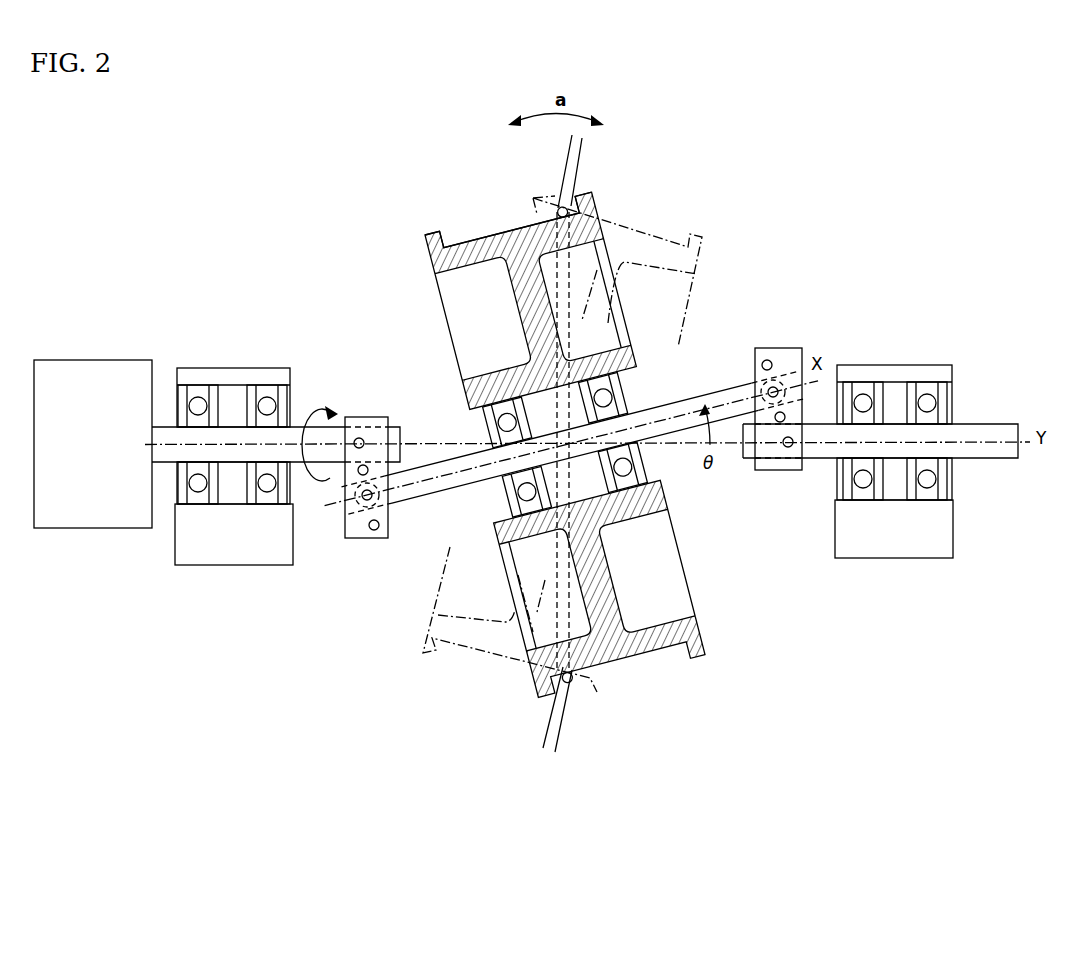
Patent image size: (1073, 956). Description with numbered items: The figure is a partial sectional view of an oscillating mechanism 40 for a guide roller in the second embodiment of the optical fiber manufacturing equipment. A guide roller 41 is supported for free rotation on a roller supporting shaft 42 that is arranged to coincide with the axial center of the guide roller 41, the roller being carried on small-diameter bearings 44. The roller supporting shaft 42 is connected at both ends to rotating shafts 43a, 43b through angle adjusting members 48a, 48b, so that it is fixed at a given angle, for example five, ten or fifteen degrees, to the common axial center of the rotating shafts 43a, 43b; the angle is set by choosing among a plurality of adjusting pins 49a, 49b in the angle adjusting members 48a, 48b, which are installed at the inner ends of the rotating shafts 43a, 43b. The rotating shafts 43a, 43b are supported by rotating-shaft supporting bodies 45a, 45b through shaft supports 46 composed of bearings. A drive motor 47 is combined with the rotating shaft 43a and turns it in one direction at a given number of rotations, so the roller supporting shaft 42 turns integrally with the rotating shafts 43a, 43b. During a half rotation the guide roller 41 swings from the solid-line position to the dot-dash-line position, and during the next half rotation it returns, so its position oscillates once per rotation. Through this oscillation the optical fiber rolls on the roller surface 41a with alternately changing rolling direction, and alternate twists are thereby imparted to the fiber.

The oscillating mechanism 40 is at (755, 228).
The guide roller 41 is at (430, 245).
The roller surface 41a is at (512, 230).
The roller supporting shaft 42 is at (478, 478).
The rotating shaft 43a is at (333, 436).
The rotating shaft 43b is at (978, 436).
The small-diameter bearings 44 is at (634, 410).
The rotating-shaft supporting body 45a is at (225, 556).
The rotating-shaft supporting body 45b is at (880, 549).
The shaft supports 46 is at (212, 390).
The drive motor 47 is at (105, 380).
The angle adjusting member 48a is at (357, 537).
The angle adjusting member 48b is at (790, 360).
The adjusting pins 49a is at (363, 497).
The adjusting pins 49b is at (773, 385).